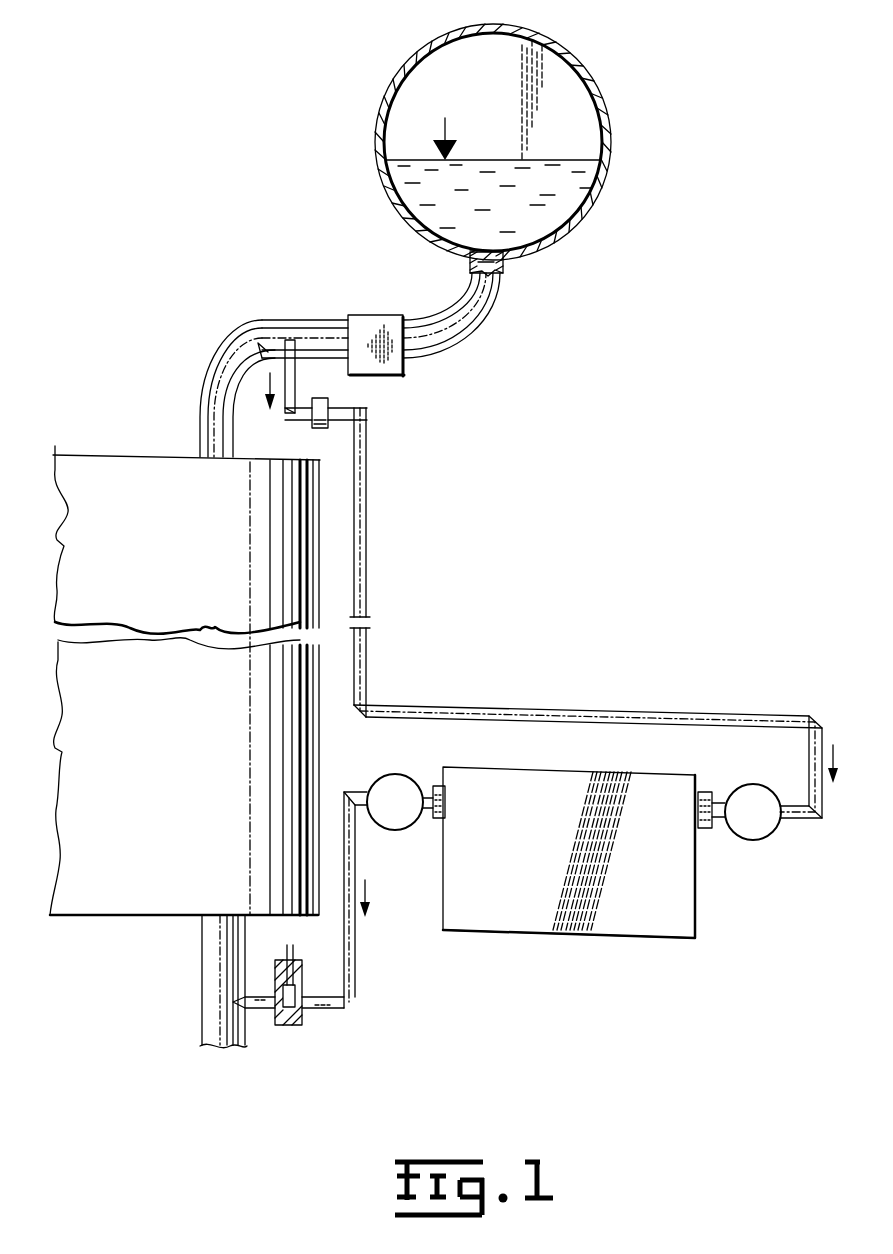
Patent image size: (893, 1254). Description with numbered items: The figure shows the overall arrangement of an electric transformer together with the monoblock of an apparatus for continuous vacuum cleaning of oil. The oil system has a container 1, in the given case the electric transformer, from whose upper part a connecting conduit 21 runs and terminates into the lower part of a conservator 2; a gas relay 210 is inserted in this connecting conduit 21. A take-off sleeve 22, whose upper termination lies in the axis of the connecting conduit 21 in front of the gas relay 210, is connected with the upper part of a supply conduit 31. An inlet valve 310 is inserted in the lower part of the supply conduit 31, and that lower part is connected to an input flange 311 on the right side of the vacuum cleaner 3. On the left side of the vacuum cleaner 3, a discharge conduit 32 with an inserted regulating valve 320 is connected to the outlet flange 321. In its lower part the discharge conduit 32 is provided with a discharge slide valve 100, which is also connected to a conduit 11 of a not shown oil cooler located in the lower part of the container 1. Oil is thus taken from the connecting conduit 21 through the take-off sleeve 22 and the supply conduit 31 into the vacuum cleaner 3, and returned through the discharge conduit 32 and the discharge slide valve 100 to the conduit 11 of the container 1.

The container 1 is at (146, 445).
The conduit 11 is at (203, 1040).
The conservator 2 is at (603, 113).
The connecting conduit 21 is at (421, 330).
The take-off sleeve 22 is at (303, 322).
The gas relay 210 is at (384, 375).
The vacuum cleaner 3 is at (638, 938).
The supply conduit 31 is at (362, 583).
The discharge conduit 32 is at (352, 968).
The inlet valve 310 is at (760, 840).
The input flange 311 is at (702, 790).
The regulating valve 320 is at (402, 832).
The outlet flange 321 is at (433, 788).
The discharge slide valve 100 is at (295, 1028).